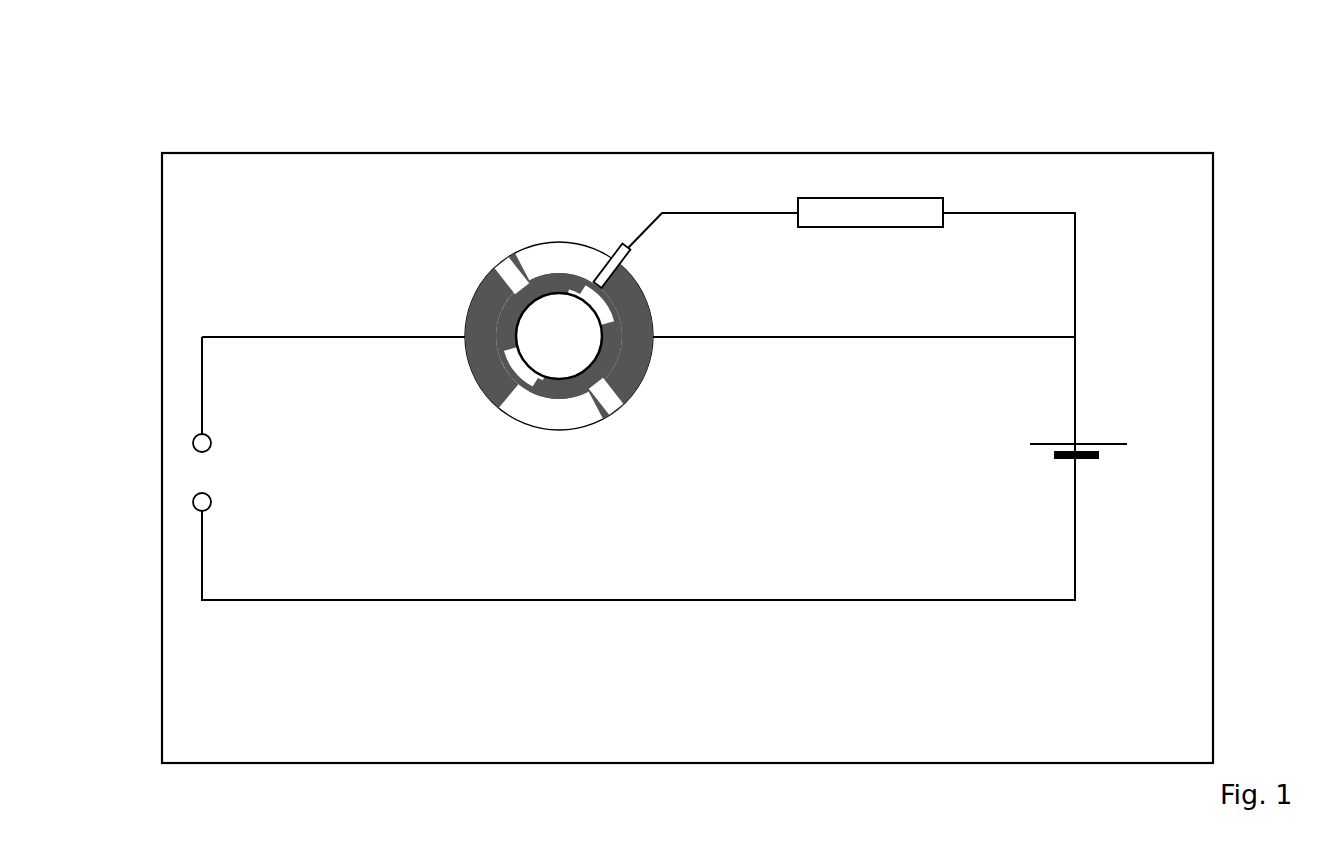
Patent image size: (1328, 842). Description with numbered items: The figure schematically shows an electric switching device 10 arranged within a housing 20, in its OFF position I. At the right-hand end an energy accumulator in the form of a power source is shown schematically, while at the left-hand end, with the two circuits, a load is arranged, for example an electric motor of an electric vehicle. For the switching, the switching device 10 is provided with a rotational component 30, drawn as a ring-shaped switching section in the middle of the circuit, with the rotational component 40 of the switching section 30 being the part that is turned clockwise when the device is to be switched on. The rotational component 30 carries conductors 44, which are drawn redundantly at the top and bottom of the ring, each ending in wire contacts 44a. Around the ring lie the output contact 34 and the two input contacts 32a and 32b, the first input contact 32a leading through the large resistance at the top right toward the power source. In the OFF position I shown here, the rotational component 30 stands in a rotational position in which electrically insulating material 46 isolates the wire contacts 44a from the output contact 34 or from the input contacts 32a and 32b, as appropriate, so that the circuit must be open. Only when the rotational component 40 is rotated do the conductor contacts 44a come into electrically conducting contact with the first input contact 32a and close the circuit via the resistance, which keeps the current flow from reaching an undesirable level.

The electric switching device 10 is at (243, 93).
The OFF position I is at (560, 118).
The housing 20 is at (1170, 152).
The rotational component 30 is at (551, 288).
The rotational component 40 is at (573, 263).
The output contact 34 is at (525, 324).
The conductors 44 is at (515, 275).
The conductor contact 44a is at (523, 283).
The electrically insulating material 46 is at (584, 280).
The first input contact 32a is at (617, 246).
The second input contact 32b is at (643, 372).